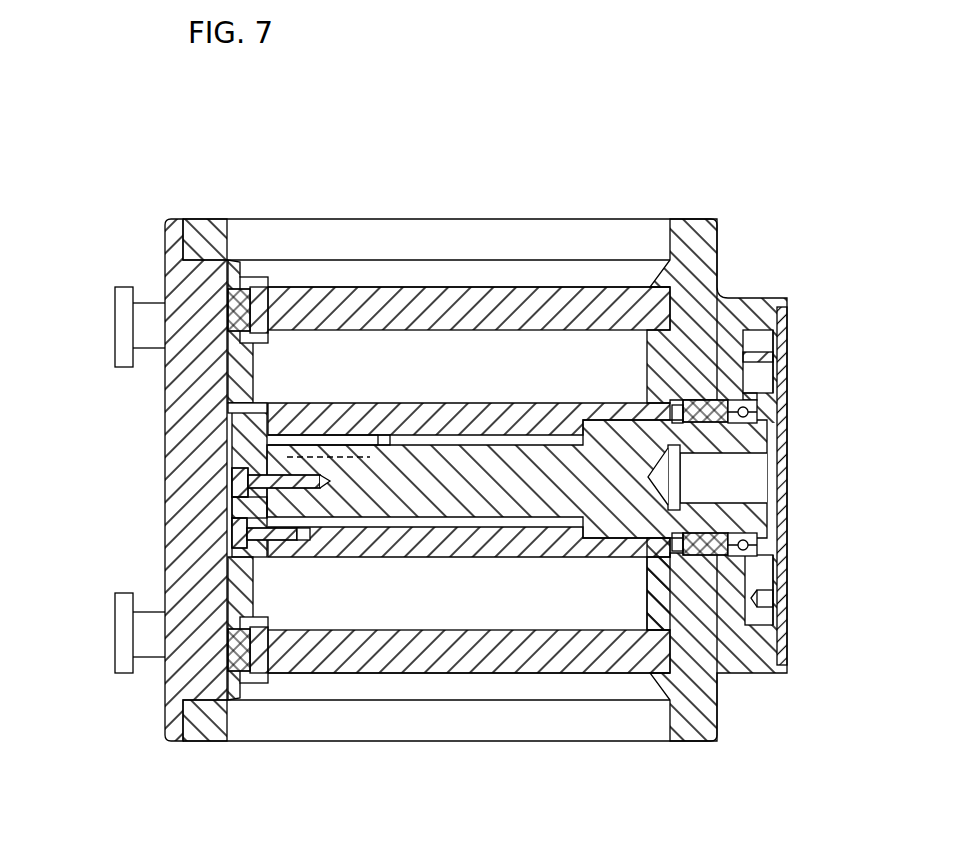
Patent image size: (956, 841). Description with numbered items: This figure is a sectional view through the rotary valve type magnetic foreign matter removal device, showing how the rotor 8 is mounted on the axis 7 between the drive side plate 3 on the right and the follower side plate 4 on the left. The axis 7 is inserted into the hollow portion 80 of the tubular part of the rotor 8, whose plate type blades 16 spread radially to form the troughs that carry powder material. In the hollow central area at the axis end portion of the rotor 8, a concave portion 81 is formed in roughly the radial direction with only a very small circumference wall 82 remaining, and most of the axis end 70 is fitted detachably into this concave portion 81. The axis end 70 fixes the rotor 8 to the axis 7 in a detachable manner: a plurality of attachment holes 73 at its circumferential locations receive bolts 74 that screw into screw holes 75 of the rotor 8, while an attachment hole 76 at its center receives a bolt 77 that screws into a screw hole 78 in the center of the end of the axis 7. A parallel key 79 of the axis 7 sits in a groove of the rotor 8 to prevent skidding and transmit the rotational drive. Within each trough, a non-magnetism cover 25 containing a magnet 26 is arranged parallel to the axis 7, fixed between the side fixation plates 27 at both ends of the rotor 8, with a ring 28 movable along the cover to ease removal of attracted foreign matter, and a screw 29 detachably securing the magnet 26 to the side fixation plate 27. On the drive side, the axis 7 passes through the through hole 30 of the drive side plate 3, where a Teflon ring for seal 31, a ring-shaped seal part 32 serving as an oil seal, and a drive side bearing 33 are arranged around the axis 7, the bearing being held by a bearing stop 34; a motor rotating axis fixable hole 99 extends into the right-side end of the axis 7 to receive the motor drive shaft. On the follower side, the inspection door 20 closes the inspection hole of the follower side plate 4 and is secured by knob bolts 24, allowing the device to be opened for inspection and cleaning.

The drive side plate 3 is at (770, 657).
The follower side plate 4 is at (203, 240).
The axis 7 is at (460, 493).
The rotor 8 is at (391, 557).
The blade 16 is at (492, 270).
The inspection door 20 is at (180, 405).
The knob bolt 24 is at (123, 325).
The non-magnetism cover 25 is at (435, 288).
The magnet 26 is at (375, 303).
The side fixation plate 27 is at (233, 272).
The ring 28 is at (262, 278).
The screw 29 is at (230, 307).
The through hole 30 is at (652, 560).
The ring for seal 31 is at (702, 404).
The ring-shaped seal part 32 is at (712, 402).
The drive side bearing 33 is at (787, 390).
The bearing stop 34 is at (787, 362).
The axis end 70 is at (283, 520).
The attachment hole 73 is at (262, 518).
The bolt 74 is at (248, 540).
The screw hole 75 is at (280, 545).
The attachment hole 76 is at (255, 486).
The bolt 77 is at (236, 468).
The screw hole 78 is at (323, 445).
The parallel key 79 is at (360, 438).
The hollow portion 80 is at (472, 440).
The concave portion 81 is at (257, 425).
The circumference wall 82 is at (247, 410).
The motor rotating axis fixable hole 99 is at (743, 483).